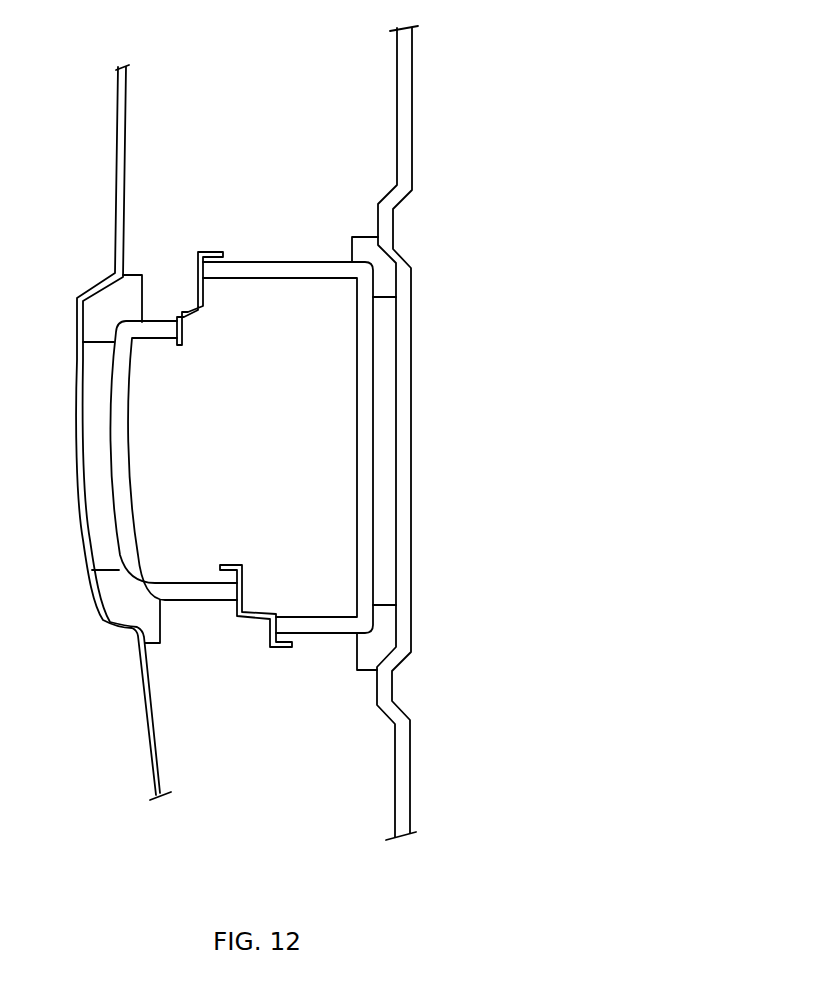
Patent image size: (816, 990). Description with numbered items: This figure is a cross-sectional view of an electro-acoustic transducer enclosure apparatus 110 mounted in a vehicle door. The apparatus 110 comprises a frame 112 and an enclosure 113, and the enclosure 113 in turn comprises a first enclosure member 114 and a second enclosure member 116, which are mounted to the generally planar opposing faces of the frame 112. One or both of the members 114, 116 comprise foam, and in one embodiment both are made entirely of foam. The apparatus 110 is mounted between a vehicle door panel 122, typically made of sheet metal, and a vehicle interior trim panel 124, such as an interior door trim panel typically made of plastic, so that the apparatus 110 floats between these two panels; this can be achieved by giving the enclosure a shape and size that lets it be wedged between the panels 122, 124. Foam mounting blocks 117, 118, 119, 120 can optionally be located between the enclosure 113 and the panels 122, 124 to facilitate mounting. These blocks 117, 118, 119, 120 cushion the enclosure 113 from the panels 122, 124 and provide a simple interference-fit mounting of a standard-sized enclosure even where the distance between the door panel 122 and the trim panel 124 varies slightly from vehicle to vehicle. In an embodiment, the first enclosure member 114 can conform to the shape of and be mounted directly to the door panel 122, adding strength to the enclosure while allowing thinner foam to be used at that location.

The electro-acoustic transducer enclosure apparatus 110 is at (272, 214).
The frame 112 is at (207, 295).
The enclosure 113 is at (307, 254).
The first enclosure member 114 is at (130, 424).
The second enclosure member 116 is at (365, 442).
The foam mounting block 117 is at (123, 288).
The foam mounting block 118 is at (145, 617).
The foam mounting block 119 is at (388, 281).
The foam mounting block 120 is at (385, 640).
The vehicle door panel 122 is at (117, 132).
The vehicle interior trim panel 124 is at (412, 116).